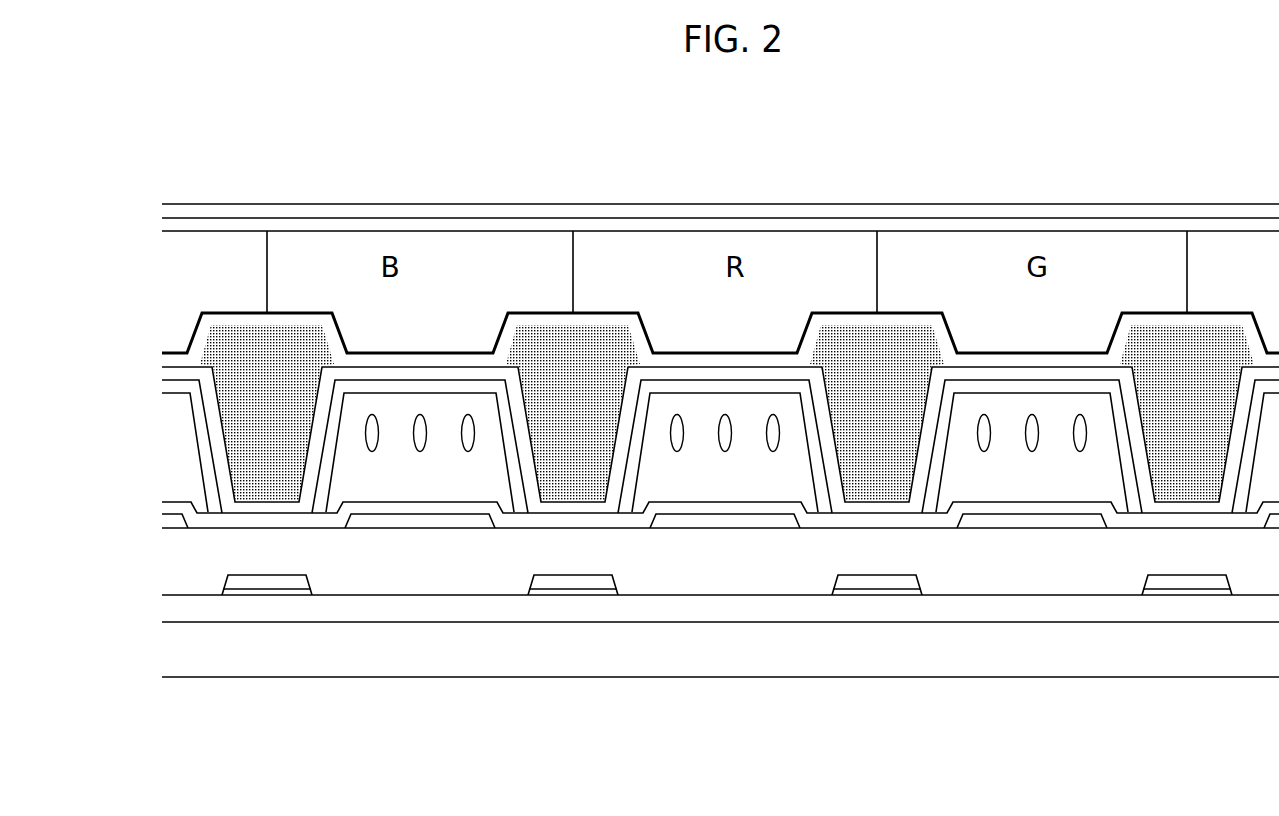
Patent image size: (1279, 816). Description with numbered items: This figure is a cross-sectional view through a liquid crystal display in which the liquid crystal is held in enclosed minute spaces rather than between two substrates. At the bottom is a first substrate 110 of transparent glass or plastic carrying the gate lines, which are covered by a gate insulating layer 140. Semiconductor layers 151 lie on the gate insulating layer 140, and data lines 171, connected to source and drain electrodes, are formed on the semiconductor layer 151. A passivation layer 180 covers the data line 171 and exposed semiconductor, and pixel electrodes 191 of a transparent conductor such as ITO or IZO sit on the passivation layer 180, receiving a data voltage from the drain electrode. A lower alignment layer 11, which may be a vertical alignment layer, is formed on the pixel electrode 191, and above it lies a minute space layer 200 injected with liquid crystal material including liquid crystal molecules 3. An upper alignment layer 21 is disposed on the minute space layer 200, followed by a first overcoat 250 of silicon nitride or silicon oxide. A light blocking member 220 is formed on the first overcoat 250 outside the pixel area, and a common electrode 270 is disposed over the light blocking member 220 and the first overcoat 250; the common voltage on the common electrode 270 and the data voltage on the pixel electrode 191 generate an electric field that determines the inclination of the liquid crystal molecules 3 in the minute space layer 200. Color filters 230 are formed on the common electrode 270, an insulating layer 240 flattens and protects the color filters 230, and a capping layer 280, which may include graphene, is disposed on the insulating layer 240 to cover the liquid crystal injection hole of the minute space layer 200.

The first substrate 110 is at (1172, 645).
The gate insulating layer 140 is at (848, 610).
The semiconductor layer 151 is at (238, 592).
The data line 171 is at (293, 583).
The passivation layer 180 is at (430, 572).
The pixel electrode 191 is at (987, 520).
The lower alignment layer 11 is at (1078, 508).
The liquid crystal molecules 3 is at (725, 452).
The minute space layer 200 is at (453, 405).
The upper alignment layer 21 is at (787, 388).
The first overcoat 250 is at (663, 372).
The light blocking member 220 is at (537, 342).
The common electrode 270 is at (597, 318).
The color filter 230 is at (297, 248).
The insulating layer 240 is at (1103, 228).
The capping layer 280 is at (960, 215).